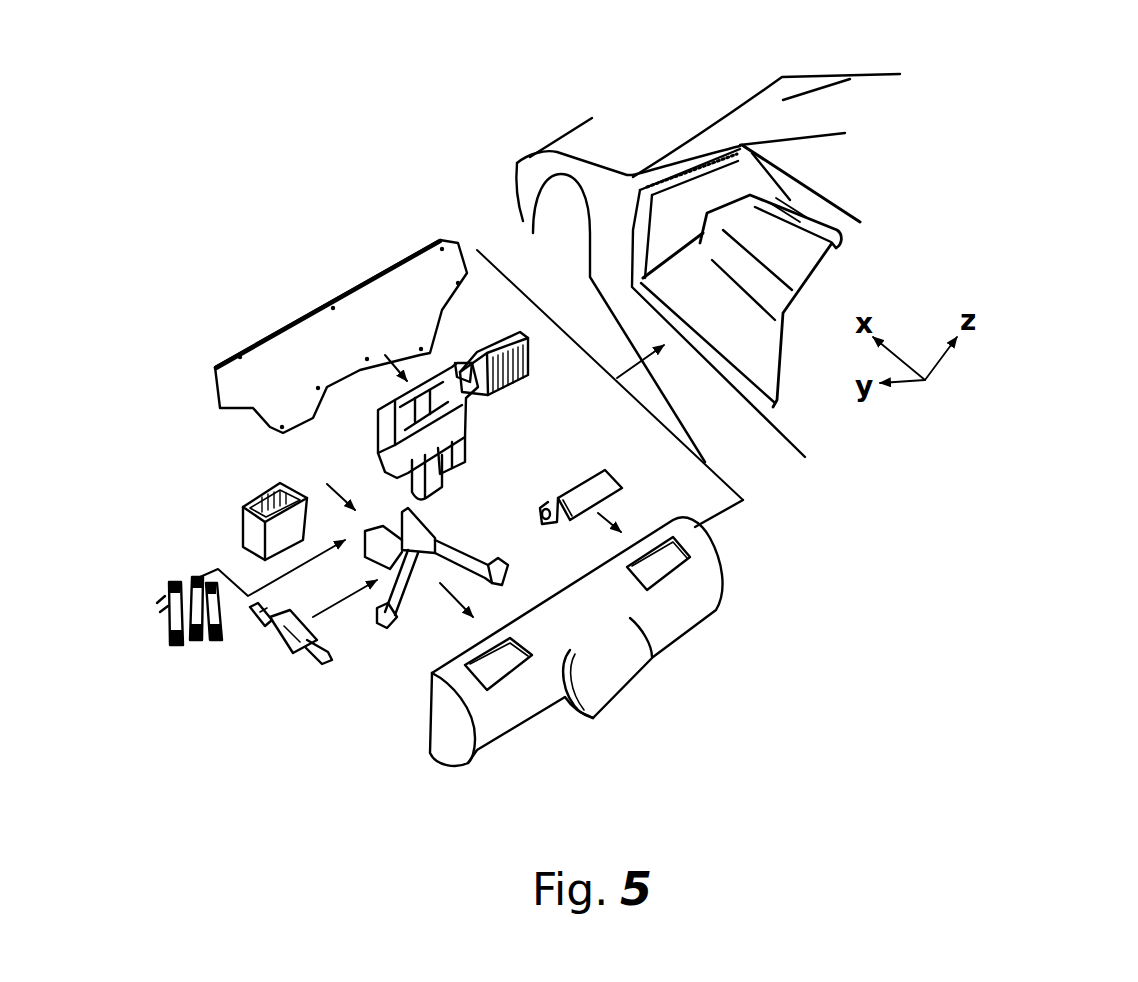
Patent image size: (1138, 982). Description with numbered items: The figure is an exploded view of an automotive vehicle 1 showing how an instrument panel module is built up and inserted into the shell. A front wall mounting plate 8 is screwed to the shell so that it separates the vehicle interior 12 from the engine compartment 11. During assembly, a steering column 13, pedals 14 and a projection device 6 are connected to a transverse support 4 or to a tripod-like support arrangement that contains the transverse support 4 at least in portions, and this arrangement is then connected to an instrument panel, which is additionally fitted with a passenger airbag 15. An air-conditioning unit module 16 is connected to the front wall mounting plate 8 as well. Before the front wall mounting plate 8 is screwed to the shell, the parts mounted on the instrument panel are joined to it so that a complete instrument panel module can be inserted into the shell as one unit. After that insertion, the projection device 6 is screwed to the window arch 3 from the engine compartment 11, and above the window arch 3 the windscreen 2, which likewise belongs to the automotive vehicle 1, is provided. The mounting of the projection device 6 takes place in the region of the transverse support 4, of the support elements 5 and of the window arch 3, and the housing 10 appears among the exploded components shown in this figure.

The automotive vehicle 1 is at (968, 503).
The windscreen 2 is at (850, 80).
The window arch 3 is at (845, 133).
The transverse support 4 is at (421, 552).
The support elements 5 is at (408, 525).
The projection device 6 is at (243, 503).
The front wall mounting plate 8 is at (339, 335).
The housing 10 is at (620, 679).
The engine compartment 11 is at (620, 153).
The vehicle interior 12 is at (855, 221).
The steering column 13 is at (283, 637).
The pedals 14 is at (172, 612).
The passenger airbag 15 is at (602, 488).
The air-conditioning unit module 16 is at (491, 350).